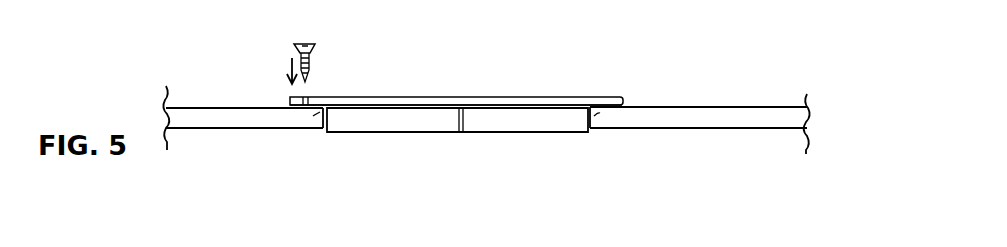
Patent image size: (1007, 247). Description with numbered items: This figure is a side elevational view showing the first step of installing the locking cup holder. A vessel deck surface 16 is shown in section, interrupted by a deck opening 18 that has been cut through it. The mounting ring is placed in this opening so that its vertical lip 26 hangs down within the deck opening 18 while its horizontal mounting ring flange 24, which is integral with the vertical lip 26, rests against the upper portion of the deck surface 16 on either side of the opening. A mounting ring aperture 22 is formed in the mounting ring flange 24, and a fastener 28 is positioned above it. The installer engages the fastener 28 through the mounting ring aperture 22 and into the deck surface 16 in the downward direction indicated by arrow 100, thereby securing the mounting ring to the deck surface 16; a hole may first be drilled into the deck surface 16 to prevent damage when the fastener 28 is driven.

The arrow 100 is at (288, 72).
The deck surface 16 is at (205, 118).
The deck opening 18 is at (320, 117).
The mounting ring aperture 22 is at (306, 97).
The mounting ring flange 24 is at (612, 97).
The vertical lip 26 is at (525, 118).
The fastener 28 is at (312, 62).